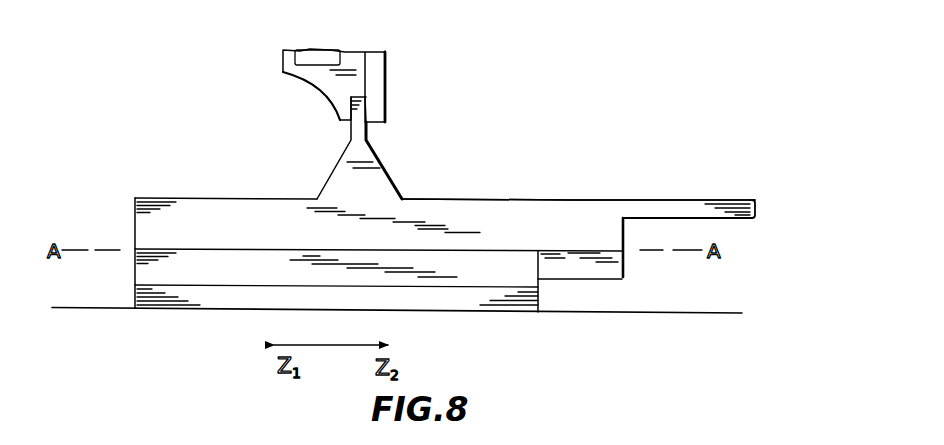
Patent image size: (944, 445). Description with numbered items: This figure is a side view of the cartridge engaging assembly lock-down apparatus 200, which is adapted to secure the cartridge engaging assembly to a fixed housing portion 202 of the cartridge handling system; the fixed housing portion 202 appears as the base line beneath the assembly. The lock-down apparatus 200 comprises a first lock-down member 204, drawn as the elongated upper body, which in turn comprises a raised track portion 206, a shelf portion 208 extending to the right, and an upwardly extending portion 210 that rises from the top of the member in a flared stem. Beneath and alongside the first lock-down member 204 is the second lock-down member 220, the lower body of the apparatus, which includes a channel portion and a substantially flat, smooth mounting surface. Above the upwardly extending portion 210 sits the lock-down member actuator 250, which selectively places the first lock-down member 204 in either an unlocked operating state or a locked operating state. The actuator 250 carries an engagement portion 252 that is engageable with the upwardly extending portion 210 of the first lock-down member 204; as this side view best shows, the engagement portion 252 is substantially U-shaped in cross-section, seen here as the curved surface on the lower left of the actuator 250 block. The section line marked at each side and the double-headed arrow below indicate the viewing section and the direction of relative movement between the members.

The cartridge engaging assembly lock-down apparatus 200 is at (213, 146).
The fixed housing portion 202 is at (723, 312).
The first lock-down member 204 is at (572, 200).
The raised track portion 206 is at (612, 270).
The shelf portion 208 is at (740, 200).
The upwardly extending portion 210 is at (343, 168).
The second lock-down member 220 is at (220, 278).
The lock-down member actuator 250 is at (355, 37).
The engagement portion 252 is at (336, 96).